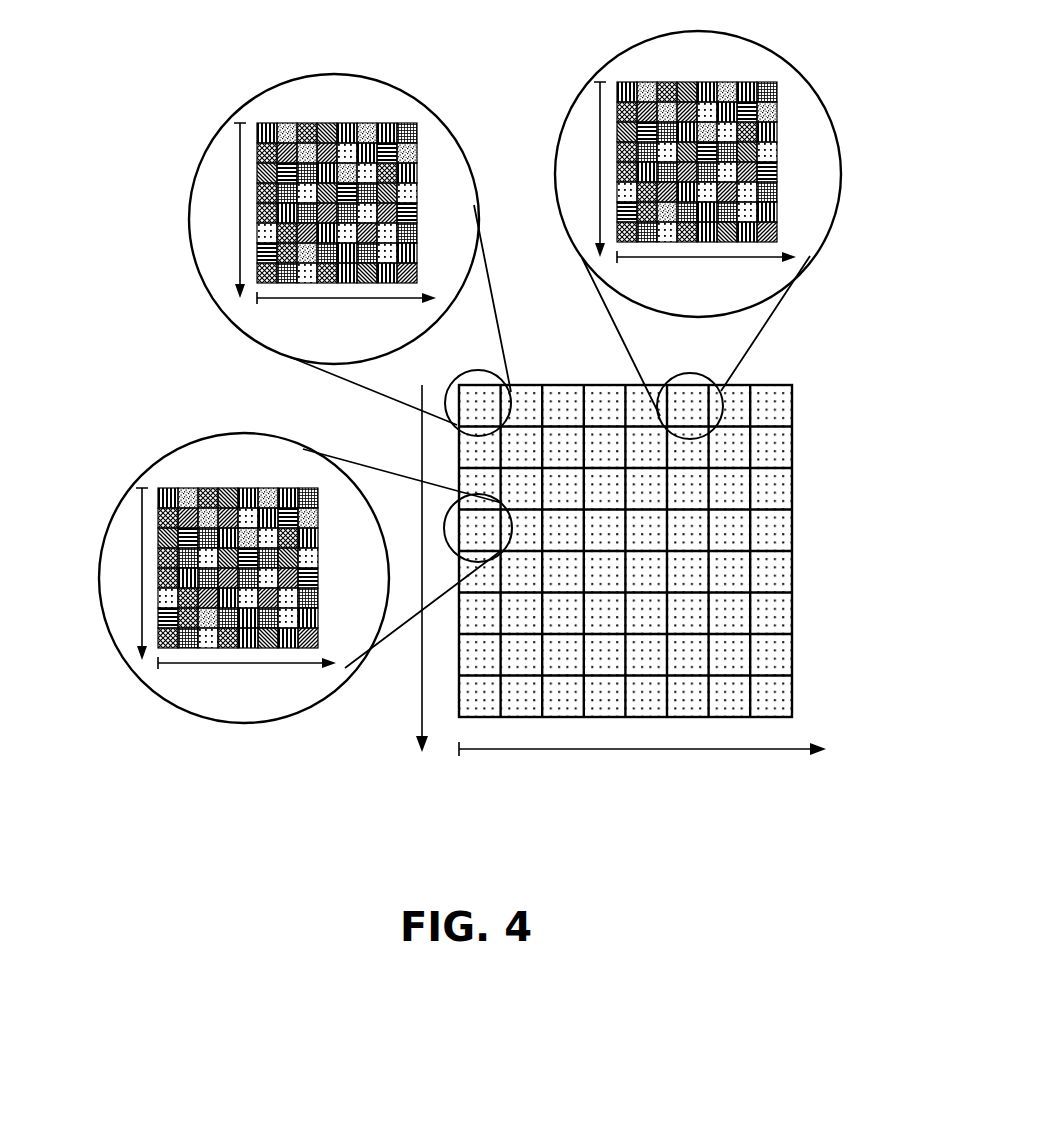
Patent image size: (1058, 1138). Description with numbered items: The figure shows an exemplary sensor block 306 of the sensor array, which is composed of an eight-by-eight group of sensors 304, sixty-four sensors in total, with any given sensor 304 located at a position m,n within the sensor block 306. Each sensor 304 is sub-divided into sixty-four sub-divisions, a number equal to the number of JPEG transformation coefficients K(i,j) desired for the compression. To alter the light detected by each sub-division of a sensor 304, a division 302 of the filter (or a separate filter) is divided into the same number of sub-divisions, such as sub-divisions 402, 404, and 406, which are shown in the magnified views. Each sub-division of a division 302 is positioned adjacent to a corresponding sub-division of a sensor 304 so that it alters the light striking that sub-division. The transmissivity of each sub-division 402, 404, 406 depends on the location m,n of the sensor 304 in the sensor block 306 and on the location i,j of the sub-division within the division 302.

The division 302 is at (208, 155).
The sensor 304 is at (781, 408).
The sensor block 306 is at (810, 562).
The sub-division 402 is at (334, 162).
The sub-division 404 is at (677, 106).
The sub-division 406 is at (220, 521).